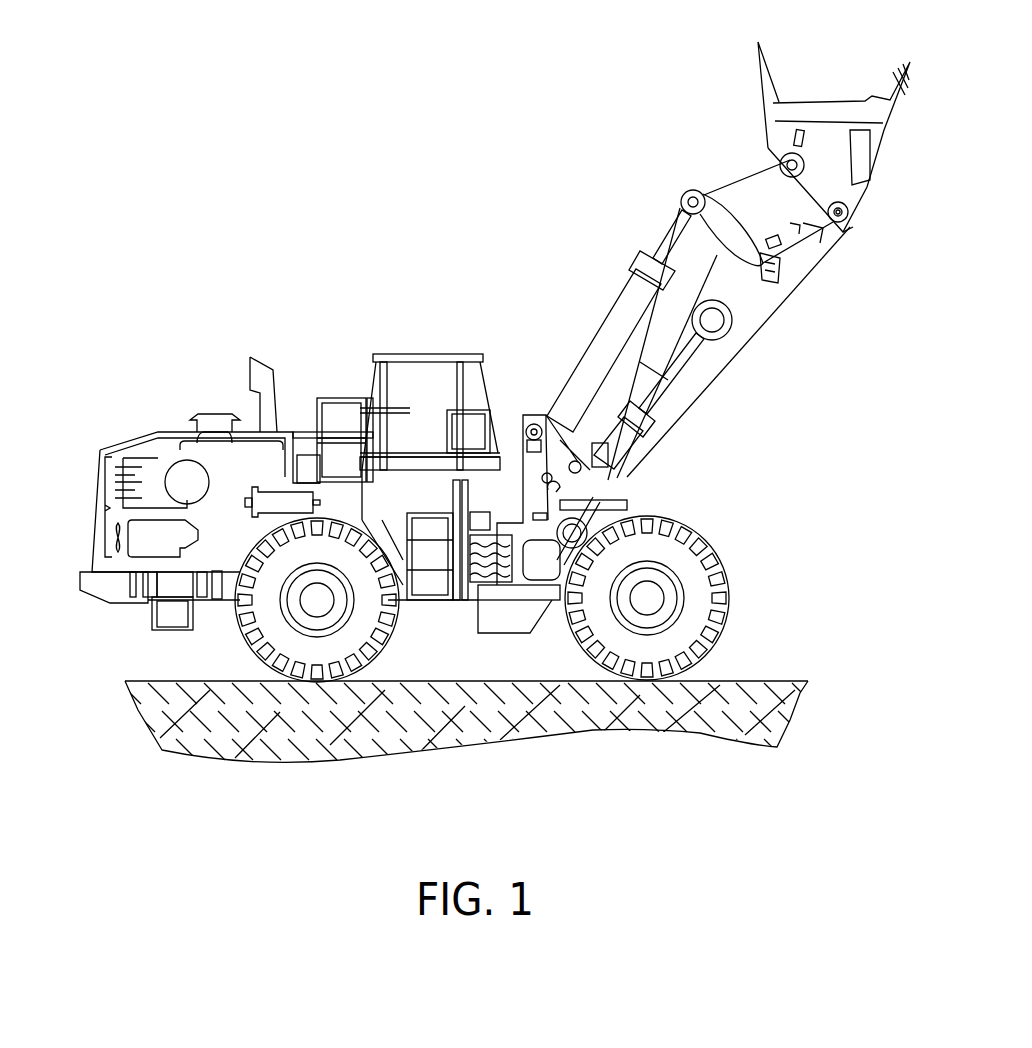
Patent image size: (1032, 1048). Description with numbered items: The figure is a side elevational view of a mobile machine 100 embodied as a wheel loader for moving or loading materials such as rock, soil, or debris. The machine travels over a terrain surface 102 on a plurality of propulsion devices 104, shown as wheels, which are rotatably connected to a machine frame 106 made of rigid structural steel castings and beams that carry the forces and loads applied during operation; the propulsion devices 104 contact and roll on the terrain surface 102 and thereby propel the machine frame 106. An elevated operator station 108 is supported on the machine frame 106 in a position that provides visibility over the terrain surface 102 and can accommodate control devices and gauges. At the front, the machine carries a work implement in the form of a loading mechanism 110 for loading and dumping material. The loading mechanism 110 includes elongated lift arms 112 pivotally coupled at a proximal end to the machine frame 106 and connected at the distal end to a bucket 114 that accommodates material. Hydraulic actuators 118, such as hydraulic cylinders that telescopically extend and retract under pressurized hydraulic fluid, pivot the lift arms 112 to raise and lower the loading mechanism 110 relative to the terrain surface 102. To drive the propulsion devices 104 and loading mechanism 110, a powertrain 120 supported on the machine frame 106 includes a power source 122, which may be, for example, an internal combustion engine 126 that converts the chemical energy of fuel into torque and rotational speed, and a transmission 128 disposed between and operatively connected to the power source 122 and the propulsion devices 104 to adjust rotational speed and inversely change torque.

The mobile machine 100 is at (208, 233).
The terrain surface 102 is at (812, 667).
The propulsion devices 104 is at (380, 665).
The machine frame 106 is at (585, 463).
The operator station 108 is at (428, 353).
The loading mechanism 110 is at (638, 215).
The lift arms 112 is at (742, 307).
The bucket 114 is at (808, 110).
The hydraulic actuators 118 is at (592, 335).
The powertrain 120 is at (197, 433).
The power source 122 is at (102, 474).
The internal combustion engine 126 is at (138, 558).
The transmission 128 is at (272, 497).